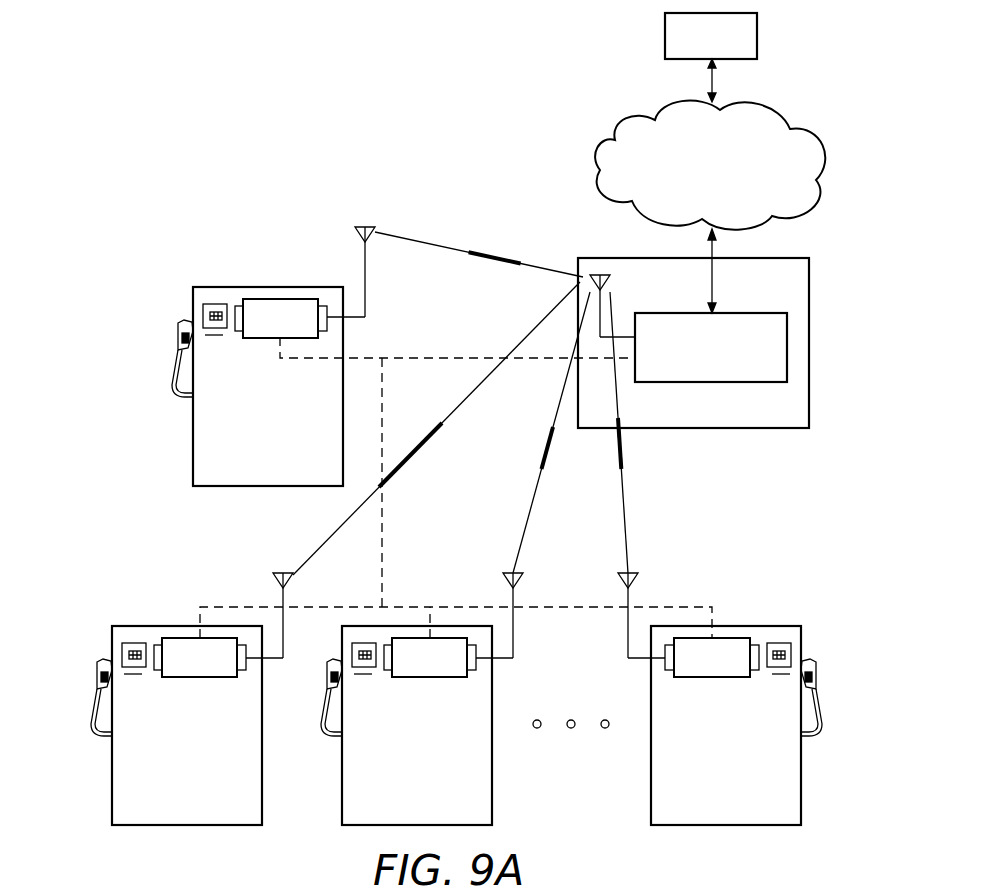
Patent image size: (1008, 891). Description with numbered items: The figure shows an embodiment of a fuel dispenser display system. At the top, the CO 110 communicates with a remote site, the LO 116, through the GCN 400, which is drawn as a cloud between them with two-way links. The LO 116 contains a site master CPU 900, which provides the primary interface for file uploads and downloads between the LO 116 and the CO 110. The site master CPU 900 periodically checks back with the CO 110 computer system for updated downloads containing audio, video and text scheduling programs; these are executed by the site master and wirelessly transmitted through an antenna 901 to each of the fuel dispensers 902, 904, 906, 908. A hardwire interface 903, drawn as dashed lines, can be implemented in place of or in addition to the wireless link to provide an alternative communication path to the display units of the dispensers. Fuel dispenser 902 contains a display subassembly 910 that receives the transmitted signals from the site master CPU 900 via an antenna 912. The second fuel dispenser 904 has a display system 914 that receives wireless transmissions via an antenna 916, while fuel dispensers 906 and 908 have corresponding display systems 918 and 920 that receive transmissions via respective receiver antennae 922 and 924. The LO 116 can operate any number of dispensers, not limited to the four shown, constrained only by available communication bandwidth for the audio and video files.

The CO 110 is at (665, 37).
The GCN 400 is at (825, 167).
The LO 116 is at (809, 340).
The site master CPU 900 is at (737, 313).
The antenna 901 is at (612, 279).
The hardwire interface 903 is at (411, 358).
The fuel dispenser 902 is at (193, 432).
The fuel dispenser 904 is at (112, 772).
The fuel dispenser 906 is at (492, 780).
The fuel dispenser 908 is at (800, 780).
The display subassembly 910 is at (262, 338).
The display system 914 is at (200, 678).
The display system 918 is at (430, 678).
The display system 920 is at (712, 678).
The antenna 912 is at (355, 233).
The antenna 916 is at (273, 579).
The receiver antenna 922 is at (525, 578).
The receiver antenna 924 is at (640, 578).